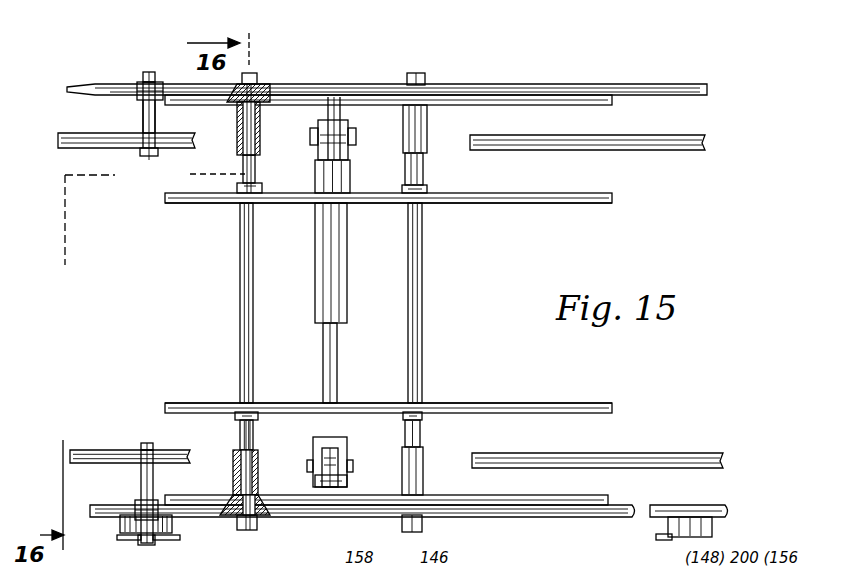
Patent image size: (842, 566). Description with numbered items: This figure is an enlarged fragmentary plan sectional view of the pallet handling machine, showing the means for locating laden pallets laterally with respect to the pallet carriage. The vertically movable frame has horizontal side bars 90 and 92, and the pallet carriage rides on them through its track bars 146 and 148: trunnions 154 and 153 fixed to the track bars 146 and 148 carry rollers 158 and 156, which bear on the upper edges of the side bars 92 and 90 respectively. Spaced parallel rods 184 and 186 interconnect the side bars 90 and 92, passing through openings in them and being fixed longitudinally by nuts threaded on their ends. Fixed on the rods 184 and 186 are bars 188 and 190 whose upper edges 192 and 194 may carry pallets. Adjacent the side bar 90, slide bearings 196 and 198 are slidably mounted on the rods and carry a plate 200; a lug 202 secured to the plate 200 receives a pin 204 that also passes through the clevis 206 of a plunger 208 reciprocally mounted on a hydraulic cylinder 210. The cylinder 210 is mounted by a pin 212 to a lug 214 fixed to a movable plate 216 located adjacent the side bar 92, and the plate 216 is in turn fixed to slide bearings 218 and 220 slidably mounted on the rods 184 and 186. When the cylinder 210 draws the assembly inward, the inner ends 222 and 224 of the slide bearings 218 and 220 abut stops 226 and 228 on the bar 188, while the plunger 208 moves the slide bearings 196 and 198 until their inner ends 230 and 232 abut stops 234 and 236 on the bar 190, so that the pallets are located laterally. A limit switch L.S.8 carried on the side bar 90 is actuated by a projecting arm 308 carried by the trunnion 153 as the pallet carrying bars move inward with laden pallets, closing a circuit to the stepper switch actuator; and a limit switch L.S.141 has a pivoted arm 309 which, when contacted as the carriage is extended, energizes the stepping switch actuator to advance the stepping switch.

The side bar 92 is at (605, 82).
The track bar 146 is at (116, 137).
The upper edge 192 is at (598, 198).
The bar 188 is at (573, 203).
The bar 190 is at (530, 404).
The upper edge 194 is at (567, 403).
The track bar 148 is at (118, 453).
The plate 200 is at (500, 502).
The side bar 90 is at (584, 517).
The limit switch L.S.8 is at (714, 525).
The rod 184 is at (243, 303).
The rod 186 is at (420, 306).
The slide bearing 218 is at (237, 130).
The inner end 222 is at (243, 159).
The stop 226 is at (262, 185).
The slide bearing 220 is at (427, 122).
The inner end 224 is at (424, 158).
The stop 228 is at (400, 189).
The movable plate 216 is at (341, 120).
The lug 214 is at (318, 120).
The pin 212 is at (350, 150).
The hydraulic cylinder 210 is at (347, 286).
The plunger 208 is at (323, 367).
The stop 234 is at (252, 410).
The stop 236 is at (410, 410).
The slide bearing 196 is at (238, 447).
The inner end 230 is at (258, 452).
The inner end 232 is at (422, 438).
The slide bearing 198 is at (423, 452).
The clevis 206 is at (347, 452).
The pin 204 is at (307, 472).
The lug 202 is at (347, 483).
The roller 158 is at (162, 55).
The trunnion 154 is at (143, 112).
The trunnion 153 is at (142, 478).
The roller 156 is at (135, 498).
The limit switch L.S.141 is at (172, 525).
The projecting arm 308 is at (178, 540).
The pivoted arm 309 is at (119, 540).